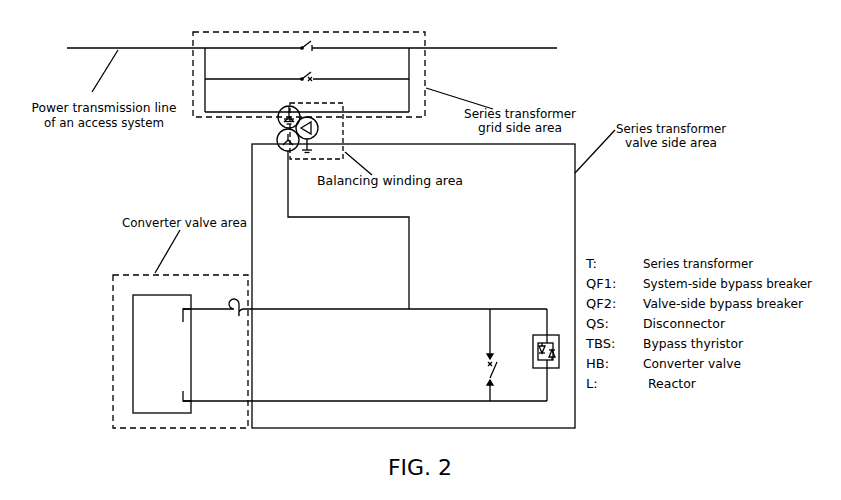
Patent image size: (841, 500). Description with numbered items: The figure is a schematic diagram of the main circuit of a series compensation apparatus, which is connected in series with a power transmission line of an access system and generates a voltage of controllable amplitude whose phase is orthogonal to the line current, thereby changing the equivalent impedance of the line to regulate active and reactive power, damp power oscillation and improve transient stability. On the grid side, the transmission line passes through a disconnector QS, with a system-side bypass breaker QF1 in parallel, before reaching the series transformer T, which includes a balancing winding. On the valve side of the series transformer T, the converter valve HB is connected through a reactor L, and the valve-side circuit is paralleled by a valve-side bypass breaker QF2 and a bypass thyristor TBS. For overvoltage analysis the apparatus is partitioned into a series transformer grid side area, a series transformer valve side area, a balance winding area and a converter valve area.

The series transformer T is at (297, 129).
The system-side bypass breaker QF1 is at (304, 69).
The valve-side bypass breaker QF2 is at (476, 355).
The disconnector QS is at (307, 40).
The bypass thyristor TBS is at (530, 351).
The converter valve HB is at (162, 354).
The reactor L is at (236, 302).